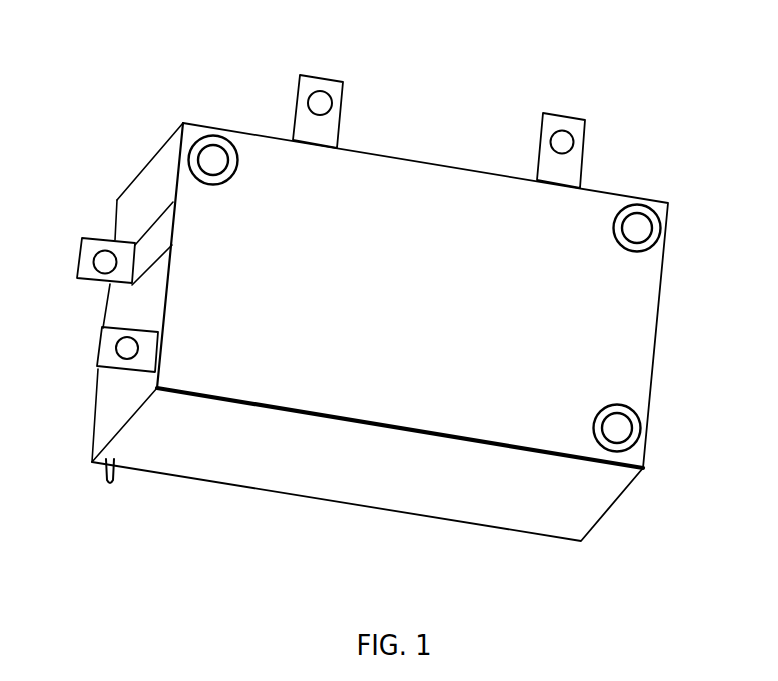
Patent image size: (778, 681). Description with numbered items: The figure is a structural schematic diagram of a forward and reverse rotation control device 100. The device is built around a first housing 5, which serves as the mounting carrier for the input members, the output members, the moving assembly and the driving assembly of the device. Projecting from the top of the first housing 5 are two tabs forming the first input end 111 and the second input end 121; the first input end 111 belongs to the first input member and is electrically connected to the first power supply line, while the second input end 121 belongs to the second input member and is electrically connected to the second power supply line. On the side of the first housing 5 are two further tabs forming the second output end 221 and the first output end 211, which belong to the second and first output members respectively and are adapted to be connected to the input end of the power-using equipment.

The forward and reverse rotation control device 100 is at (496, 34).
The first housing 5 is at (623, 342).
The first input end 111 is at (331, 132).
The second input end 121 is at (566, 167).
The second output end 221 is at (84, 250).
The first output end 211 is at (107, 353).